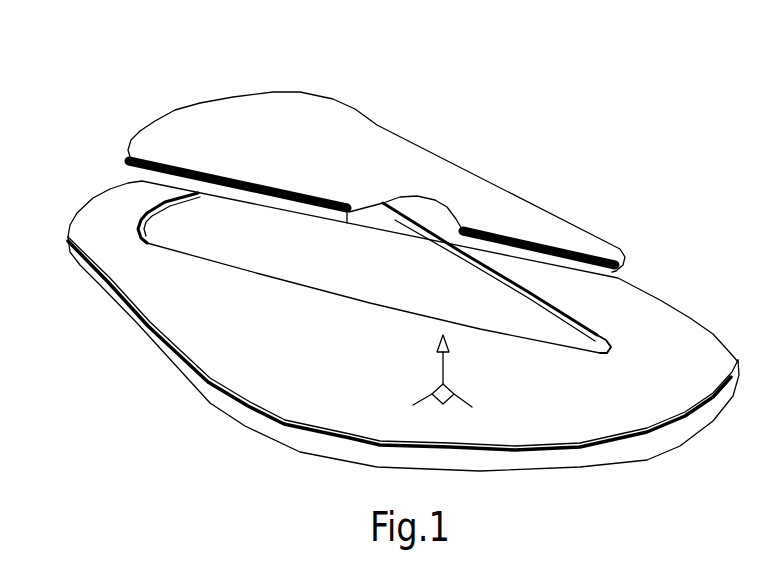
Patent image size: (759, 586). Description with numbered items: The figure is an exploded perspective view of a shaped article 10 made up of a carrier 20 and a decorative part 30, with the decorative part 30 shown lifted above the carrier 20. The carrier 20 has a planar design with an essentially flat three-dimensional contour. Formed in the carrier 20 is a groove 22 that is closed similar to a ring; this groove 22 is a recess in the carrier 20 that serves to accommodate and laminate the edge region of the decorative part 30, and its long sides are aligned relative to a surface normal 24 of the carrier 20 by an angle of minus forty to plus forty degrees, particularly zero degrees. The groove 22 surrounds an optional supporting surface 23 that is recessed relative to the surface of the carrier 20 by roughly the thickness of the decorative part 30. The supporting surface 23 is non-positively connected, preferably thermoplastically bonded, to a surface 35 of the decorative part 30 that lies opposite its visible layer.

The shaped article 10 is at (388, 248).
The carrier 20 is at (403, 326).
The groove 22 is at (438, 278).
The supporting surface 23 is at (119, 211).
The surface normal 24 is at (410, 371).
The decorative part 30 is at (376, 161).
The surface of the decorative part 35 is at (376, 230).